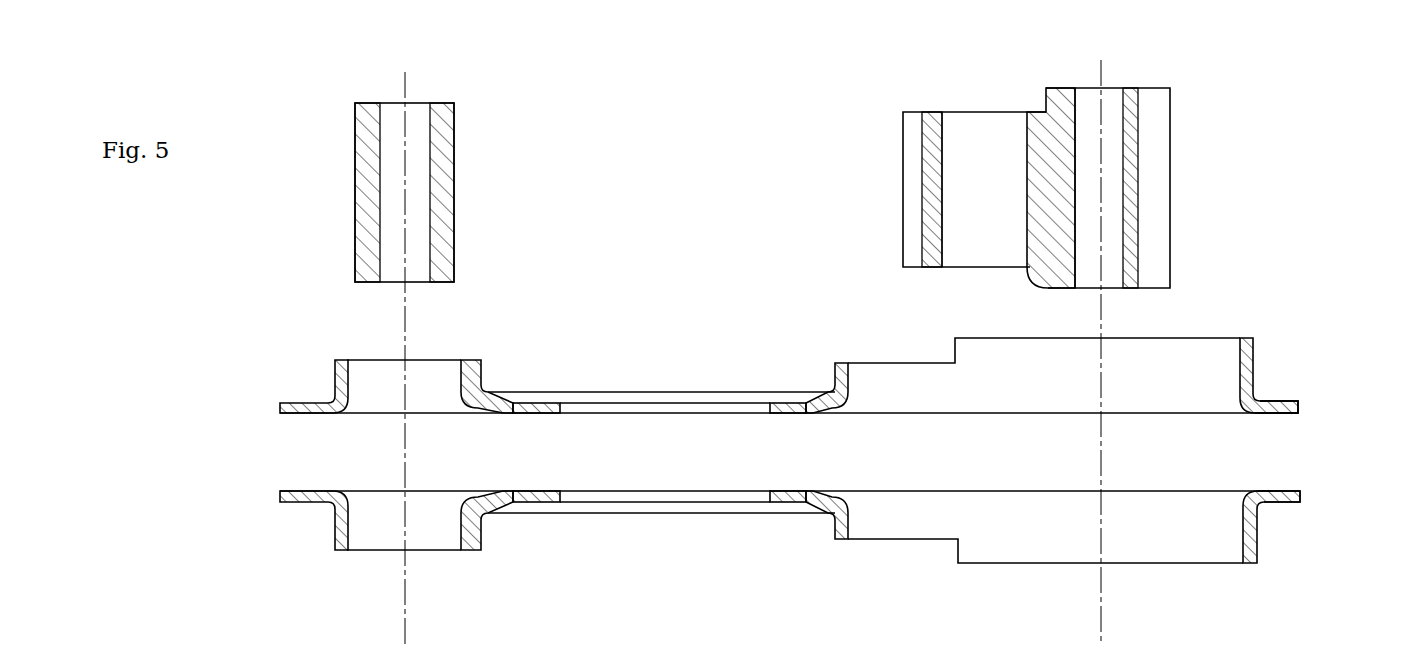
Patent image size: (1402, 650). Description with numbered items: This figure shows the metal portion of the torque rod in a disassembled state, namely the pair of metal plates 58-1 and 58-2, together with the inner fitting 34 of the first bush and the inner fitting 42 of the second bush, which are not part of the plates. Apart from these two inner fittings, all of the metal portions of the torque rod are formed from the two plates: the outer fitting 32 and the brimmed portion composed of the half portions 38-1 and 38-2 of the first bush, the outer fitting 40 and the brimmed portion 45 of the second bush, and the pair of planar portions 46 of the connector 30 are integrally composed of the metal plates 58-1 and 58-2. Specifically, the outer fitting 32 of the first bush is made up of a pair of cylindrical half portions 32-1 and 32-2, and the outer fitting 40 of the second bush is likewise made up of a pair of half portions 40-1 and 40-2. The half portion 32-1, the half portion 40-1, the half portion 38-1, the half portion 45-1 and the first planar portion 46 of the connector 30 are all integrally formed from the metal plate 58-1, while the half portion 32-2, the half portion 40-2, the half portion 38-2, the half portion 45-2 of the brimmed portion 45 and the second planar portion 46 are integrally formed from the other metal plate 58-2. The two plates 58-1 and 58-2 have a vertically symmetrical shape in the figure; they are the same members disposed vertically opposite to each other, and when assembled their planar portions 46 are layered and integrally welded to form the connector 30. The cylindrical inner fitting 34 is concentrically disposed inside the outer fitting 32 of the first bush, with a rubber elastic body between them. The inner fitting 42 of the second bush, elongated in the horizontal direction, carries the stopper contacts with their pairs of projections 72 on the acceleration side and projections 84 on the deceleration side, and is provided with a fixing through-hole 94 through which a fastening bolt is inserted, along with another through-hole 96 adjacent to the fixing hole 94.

The connector 30 is at (701, 388).
The outer fitting 32 is at (483, 363).
The half portion 32-1 is at (462, 352).
The half portion 32-2 is at (468, 554).
The inner fitting 34 is at (453, 136).
The half portion 38-1 is at (300, 404).
The half portion 38-2 is at (301, 505).
The outer fitting 40 is at (1251, 354).
The half portion 40-1 is at (1240, 360).
The half portion 40-2 is at (1243, 534).
The inner fitting 42 is at (1036, 107).
The brimmed portion 45 is at (1266, 398).
The half portion 45-1 is at (1292, 401).
The half portion 45-2 is at (1298, 502).
The planar portion 46 is at (553, 402).
The metal plate 58-1 is at (621, 388).
The metal plate 58-2 is at (626, 521).
The projection 72 is at (1170, 113).
The projection 84 is at (903, 134).
The fixing through-hole 94 is at (1085, 252).
The through-hole 96 is at (946, 262).